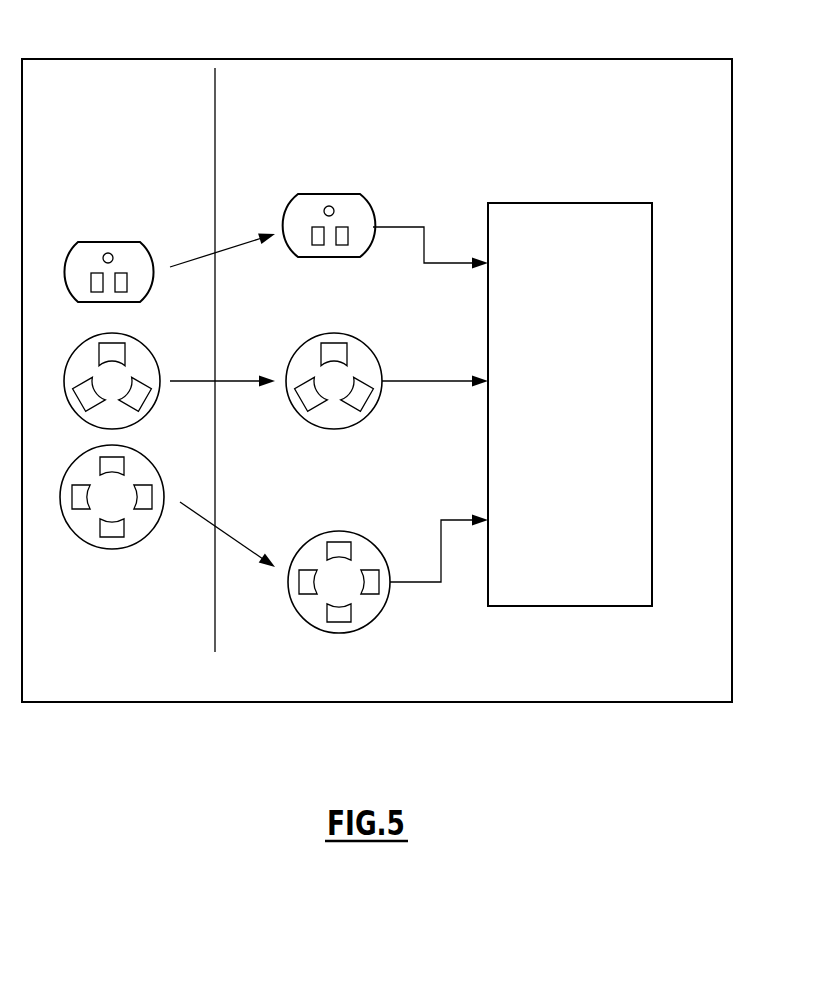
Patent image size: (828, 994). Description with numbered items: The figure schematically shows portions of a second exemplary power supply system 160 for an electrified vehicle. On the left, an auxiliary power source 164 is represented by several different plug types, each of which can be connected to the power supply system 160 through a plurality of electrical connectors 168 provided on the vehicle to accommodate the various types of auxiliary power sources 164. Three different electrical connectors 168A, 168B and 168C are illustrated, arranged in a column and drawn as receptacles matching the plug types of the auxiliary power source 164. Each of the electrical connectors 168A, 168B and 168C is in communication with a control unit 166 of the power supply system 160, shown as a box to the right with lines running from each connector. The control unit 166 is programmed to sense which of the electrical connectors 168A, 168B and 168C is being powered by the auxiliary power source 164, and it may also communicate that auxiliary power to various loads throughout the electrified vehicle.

The power supply system 160 is at (432, 82).
The auxiliary power source 164 is at (105, 88).
The control unit 166 is at (652, 238).
The plurality of electrical connectors 168 is at (371, 357).
The electrical connector 168A is at (380, 203).
The electrical connector 168B is at (386, 358).
The electrical connector 168C is at (388, 541).